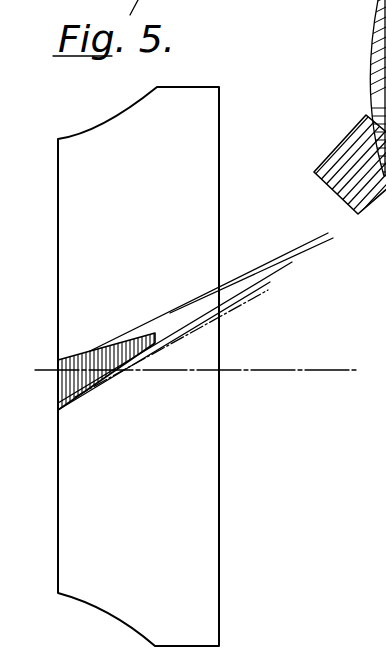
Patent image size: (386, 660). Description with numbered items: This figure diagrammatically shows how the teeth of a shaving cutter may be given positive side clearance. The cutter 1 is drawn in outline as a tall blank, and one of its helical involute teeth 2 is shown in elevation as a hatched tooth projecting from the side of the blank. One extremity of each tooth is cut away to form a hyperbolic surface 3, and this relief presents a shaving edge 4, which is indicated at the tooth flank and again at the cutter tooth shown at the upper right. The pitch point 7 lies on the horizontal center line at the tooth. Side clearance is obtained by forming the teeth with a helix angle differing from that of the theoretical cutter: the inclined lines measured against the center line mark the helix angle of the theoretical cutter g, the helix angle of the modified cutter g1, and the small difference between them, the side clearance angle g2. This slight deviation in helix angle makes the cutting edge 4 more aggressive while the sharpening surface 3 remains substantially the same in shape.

The shaving tool 1 is at (232, 123).
The helical involute teeth 2 is at (168, 325).
The hyperbolic surfaces 3 is at (90, 349).
The shaving edges 4 is at (384, 74).
The pitch point 7 is at (127, 372).
The helix angle of the theoretical cutter g is at (288, 276).
The helix angle of the modified cutter g1 is at (310, 262).
The side clearance angle g2 is at (300, 208).